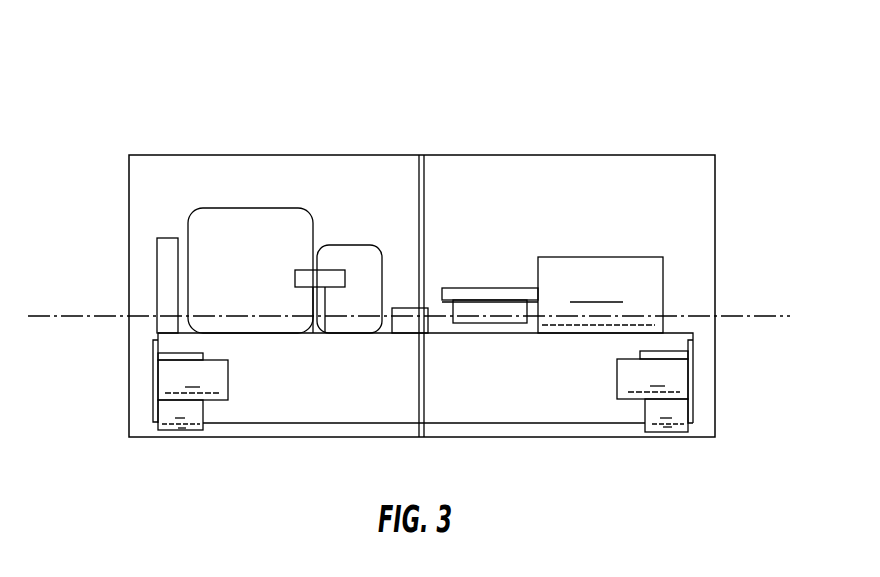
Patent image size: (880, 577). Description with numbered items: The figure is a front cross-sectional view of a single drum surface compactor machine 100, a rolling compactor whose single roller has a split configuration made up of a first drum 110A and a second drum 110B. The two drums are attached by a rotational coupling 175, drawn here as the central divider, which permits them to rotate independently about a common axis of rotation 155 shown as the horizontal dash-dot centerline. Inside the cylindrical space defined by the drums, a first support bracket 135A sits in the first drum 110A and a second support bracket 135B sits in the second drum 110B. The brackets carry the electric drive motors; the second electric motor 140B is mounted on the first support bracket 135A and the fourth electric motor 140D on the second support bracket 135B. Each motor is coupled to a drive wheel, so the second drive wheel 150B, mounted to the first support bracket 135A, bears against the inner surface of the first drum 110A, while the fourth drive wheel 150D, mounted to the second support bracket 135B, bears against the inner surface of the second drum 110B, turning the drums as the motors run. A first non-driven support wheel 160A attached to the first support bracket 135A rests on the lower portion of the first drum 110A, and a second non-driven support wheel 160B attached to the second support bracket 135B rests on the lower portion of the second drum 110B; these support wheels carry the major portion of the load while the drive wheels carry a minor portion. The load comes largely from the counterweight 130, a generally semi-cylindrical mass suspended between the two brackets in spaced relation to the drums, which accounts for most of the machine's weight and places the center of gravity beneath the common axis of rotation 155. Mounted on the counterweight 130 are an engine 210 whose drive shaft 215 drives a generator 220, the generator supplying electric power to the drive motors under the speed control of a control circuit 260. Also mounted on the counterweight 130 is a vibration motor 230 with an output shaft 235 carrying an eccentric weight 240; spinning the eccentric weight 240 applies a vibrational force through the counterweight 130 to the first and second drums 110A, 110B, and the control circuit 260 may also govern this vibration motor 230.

The surface compactor machine 100 is at (686, 90).
The first drum 110A is at (129, 228).
The second drum 110B is at (702, 207).
The counterweight 130 is at (380, 383).
The first support bracket 135A is at (143, 388).
The second support bracket 135B is at (693, 387).
The second electric motor 140B is at (170, 368).
The fourth electric motor 140D is at (678, 373).
The second drive wheel 150B is at (153, 412).
The fourth drive wheel 150D is at (675, 408).
The common axis of rotation 155 is at (758, 315).
The first non-driven support wheel 160A is at (182, 428).
The second non-driven support wheel 160B is at (668, 427).
The rotational coupling 175 is at (427, 392).
The engine 210 is at (232, 255).
The drive shaft 215 is at (327, 335).
The generator 220 is at (324, 257).
The vibration motor 230 is at (587, 280).
The output shaft 235 is at (508, 298).
The eccentric weight 240 is at (472, 308).
The control circuit 260 is at (410, 307).